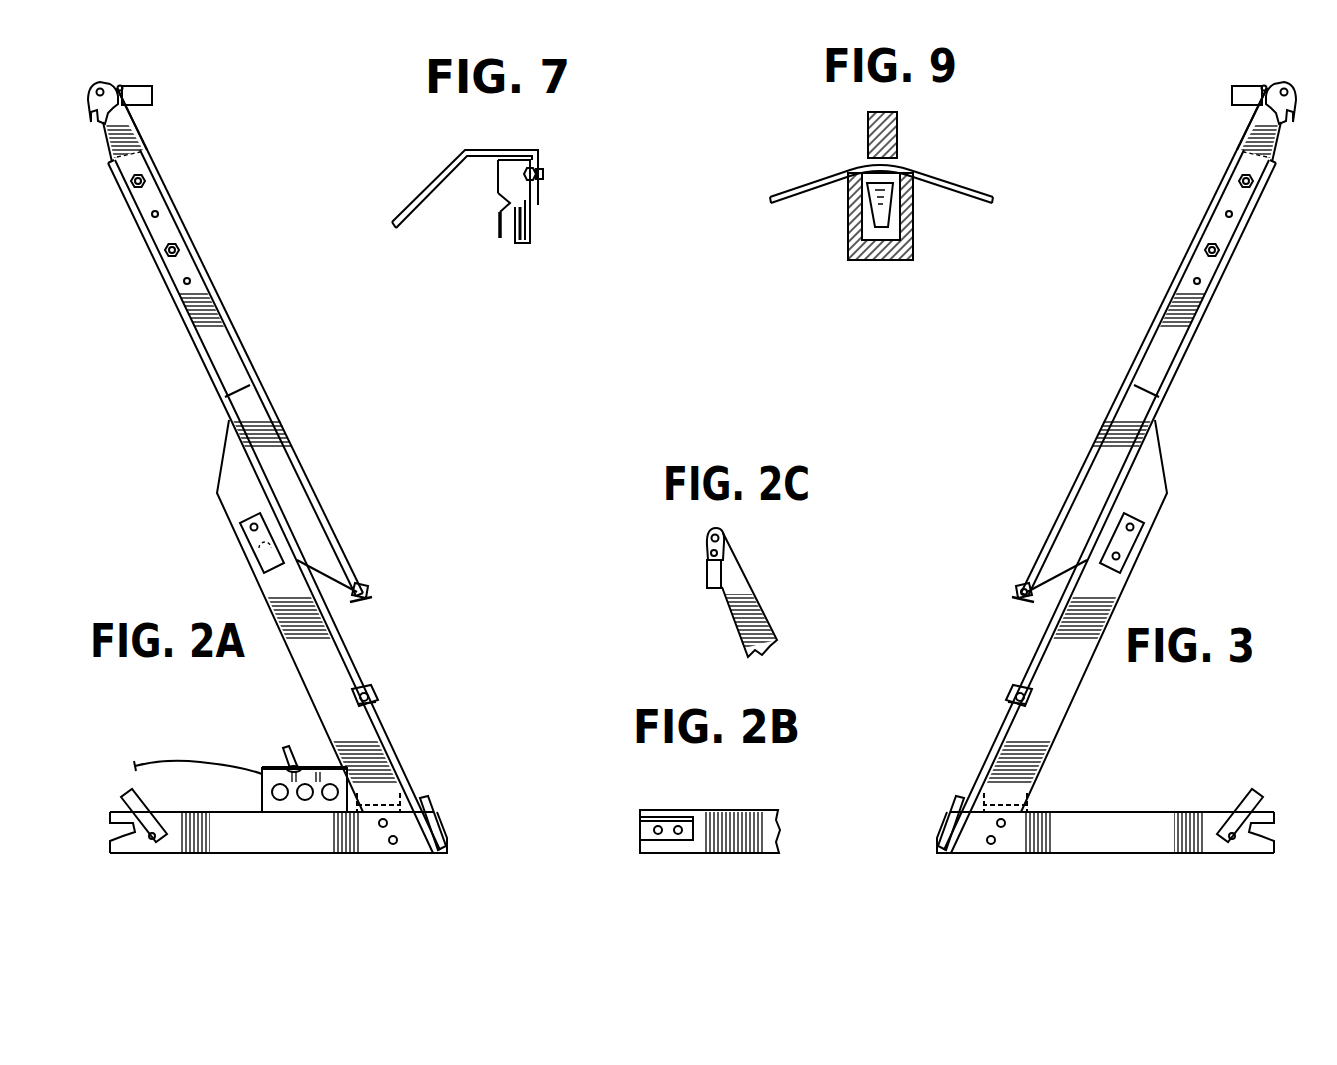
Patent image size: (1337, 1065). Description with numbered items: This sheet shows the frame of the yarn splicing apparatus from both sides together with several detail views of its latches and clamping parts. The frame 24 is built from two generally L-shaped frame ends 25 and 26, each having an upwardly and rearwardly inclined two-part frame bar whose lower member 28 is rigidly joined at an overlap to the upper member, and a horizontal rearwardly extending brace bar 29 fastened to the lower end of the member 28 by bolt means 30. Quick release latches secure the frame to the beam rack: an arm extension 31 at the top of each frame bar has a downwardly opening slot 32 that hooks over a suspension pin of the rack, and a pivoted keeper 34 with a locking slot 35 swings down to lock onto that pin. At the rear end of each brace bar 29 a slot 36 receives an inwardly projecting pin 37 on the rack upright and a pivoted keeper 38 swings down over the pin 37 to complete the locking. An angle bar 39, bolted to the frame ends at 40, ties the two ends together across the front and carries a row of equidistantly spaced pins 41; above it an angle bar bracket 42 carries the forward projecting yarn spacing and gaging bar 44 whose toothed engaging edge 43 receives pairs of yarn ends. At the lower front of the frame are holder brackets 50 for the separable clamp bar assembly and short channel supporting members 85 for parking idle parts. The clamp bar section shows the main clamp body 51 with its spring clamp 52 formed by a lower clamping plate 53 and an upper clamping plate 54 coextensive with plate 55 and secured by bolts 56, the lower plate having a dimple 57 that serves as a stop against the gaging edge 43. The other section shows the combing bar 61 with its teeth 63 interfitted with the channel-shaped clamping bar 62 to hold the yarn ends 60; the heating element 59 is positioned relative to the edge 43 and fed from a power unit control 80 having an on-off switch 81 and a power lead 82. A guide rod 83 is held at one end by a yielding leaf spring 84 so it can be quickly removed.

In FIG. 2A, the frame 24 is at (273, 412).
In FIG. 2A, the frame end 25 is at (168, 313).
In FIG. 3, the frame end 26 is at (1235, 275).
In FIG. 2A, the frame bar member 28 is at (363, 737).
In FIG. 3, the frame bar member 28 is at (1076, 616).
In FIG. 2A, the brace bar 29 is at (227, 833).
In FIG. 3, the brace bar 29 is at (1118, 810).
In FIG. 2B, the brace bar 29 is at (730, 817).
In FIG. 2A, the bolt means 30 is at (387, 850).
In FIG. 3, the bolt means 30 is at (996, 842).
In FIG. 2A, the arm extension 31 is at (135, 143).
In FIG. 3, the arm extension 31 is at (1255, 124).
In FIG. 2C, the arm extension 31 is at (760, 607).
In FIG. 2A, the downwardly opening slot 32 is at (100, 120).
In FIG. 3, the downwardly opening slot 32 is at (1287, 113).
In FIG. 2C, the downwardly opening slot 32 is at (727, 571).
In FIG. 2A, the pivoted keeper 34 is at (150, 88).
In FIG. 3, the pivoted keeper 34 is at (1247, 84).
In FIG. 2C, the pivoted keeper 34 is at (710, 588).
In FIG. 2A, the locking slot 35 is at (122, 87).
In FIG. 3, the locking slot 35 is at (1267, 87).
In FIG. 2C, the locking slot 35 is at (709, 552).
In FIG. 2A, the slot 36 is at (122, 815).
In FIG. 3, the slot 36 is at (1259, 845).
In FIG. 2B, the pin 37 is at (658, 826).
In FIG. 2A, the pivoted keeper 38 is at (147, 795).
In FIG. 3, the pivoted keeper 38 is at (1253, 793).
In FIG. 2B, the pivoted keeper 38 is at (640, 828).
In FIG. 2A, the angle bar 39 is at (358, 687).
In FIG. 3, the angle bar 39 is at (1035, 680).
In FIG. 2A, the bolt 40 is at (377, 688).
In FIG. 3, the bolt 40 is at (1015, 692).
In FIG. 2A, the pins 41 is at (377, 702).
In FIG. 3, the pins 41 is at (1007, 701).
In FIG. 2A, the angle bar bracket 42 is at (355, 600).
In FIG. 3, the angle bar bracket 42 is at (1030, 600).
In FIG. 2A, the toothed engaging edge 43 is at (363, 585).
In FIG. 3, the toothed engaging edge 43 is at (1023, 584).
In FIG. 2A, the yarn spacing and gaging bar 44 is at (358, 582).
In FIG. 3, the yarn spacing and gaging bar 44 is at (1030, 580).
In FIG. 2A, the holder bracket 50 is at (432, 803).
In FIG. 3, the holder bracket 50 is at (954, 802).
In FIG. 7, the main clamp body 51 is at (483, 148).
In FIG. 7, the spring clamp 52 is at (522, 243).
In FIG. 7, the lower clamping plate 53 is at (497, 230).
In FIG. 7, the upper clamping plate 54 is at (524, 222).
In FIG. 7, the plate 55 is at (536, 212).
In FIG. 7, the bolts 56 is at (545, 170).
In FIG. 7, the dimple 57 is at (495, 197).
In FIG. 3, the heating element 59 is at (1022, 593).
In FIG. 9, the yarn ends 60 is at (943, 173).
In FIG. 9, the combing bar 61 is at (897, 123).
In FIG. 9, the channel-shaped clamping bar 62 is at (848, 250).
In FIG. 9, the teeth 63 is at (867, 217).
In FIG. 2A, the power unit control 80 is at (262, 767).
In FIG. 2A, the heating element on-off switch 81 is at (293, 733).
In FIG. 2A, the power lead 82 is at (197, 762).
In FIG. 2A, the guide rod 83 is at (262, 568).
In FIG. 2A, the leaf spring 84 is at (250, 530).
In FIG. 2A, the channel supporting member 85 is at (402, 797).
In FIG. 3, the channel supporting member 85 is at (1022, 803).